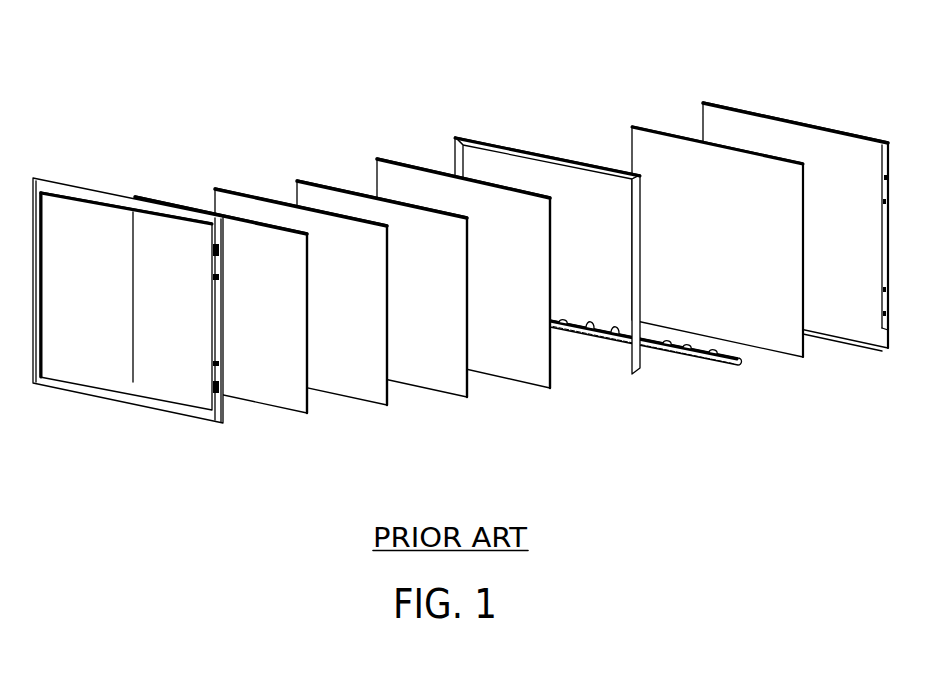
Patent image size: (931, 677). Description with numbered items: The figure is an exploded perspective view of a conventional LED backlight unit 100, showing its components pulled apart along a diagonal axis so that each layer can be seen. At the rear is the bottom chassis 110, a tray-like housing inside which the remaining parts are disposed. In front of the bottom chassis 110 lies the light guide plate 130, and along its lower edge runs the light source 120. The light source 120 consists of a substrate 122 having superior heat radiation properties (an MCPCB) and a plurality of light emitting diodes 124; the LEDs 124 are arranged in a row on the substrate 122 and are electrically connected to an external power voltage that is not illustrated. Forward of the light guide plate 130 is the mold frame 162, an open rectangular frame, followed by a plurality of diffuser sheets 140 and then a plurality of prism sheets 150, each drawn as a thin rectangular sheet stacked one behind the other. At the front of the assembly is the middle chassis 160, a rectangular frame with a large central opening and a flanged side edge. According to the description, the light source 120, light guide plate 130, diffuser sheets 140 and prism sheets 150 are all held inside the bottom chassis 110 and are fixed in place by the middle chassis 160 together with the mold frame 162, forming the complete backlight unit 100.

The backlight unit 100 is at (410, 122).
The bottom chassis 110 is at (788, 130).
The light source 120 is at (646, 397).
The substrate 122 is at (722, 367).
The light emitting diodes 124 is at (705, 435).
The light guide plate 130 is at (668, 143).
The diffuser sheets 140 is at (502, 370).
The prism sheets 150 is at (337, 385).
The middle chassis 160 is at (80, 197).
The mold frame 162 is at (540, 150).